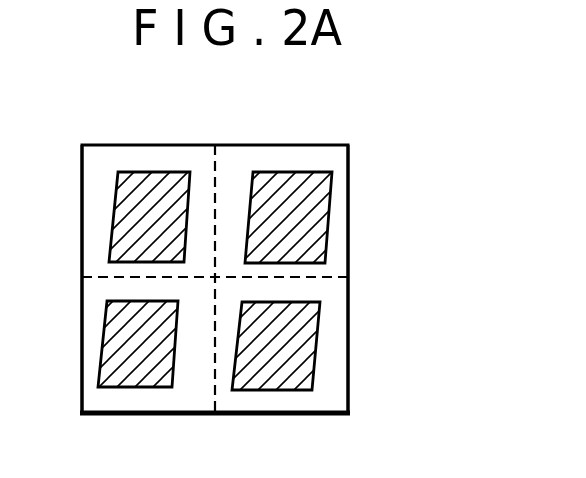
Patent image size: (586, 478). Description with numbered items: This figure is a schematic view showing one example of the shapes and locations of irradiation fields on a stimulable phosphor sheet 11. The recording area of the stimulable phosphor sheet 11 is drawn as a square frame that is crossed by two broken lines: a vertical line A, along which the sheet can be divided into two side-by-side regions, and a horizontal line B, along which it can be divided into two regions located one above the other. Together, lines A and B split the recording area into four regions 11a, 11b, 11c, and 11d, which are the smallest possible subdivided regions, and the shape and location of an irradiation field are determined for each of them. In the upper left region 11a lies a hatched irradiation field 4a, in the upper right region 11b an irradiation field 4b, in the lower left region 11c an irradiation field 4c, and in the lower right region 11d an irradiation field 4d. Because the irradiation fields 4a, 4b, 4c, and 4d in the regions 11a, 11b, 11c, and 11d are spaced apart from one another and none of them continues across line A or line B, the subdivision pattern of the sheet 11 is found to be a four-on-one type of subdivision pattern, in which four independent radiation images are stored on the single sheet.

The stimulable phosphor sheet 11 is at (354, 193).
The region 11a is at (98, 162).
The region 11b is at (333, 158).
The region 11c is at (95, 303).
The region 11d is at (347, 320).
The irradiation field 4a is at (157, 174).
The irradiation field 4b is at (297, 187).
The irradiation field 4c is at (160, 375).
The irradiation field 4d is at (283, 378).
The line A is at (215, 172).
The line B is at (335, 277).